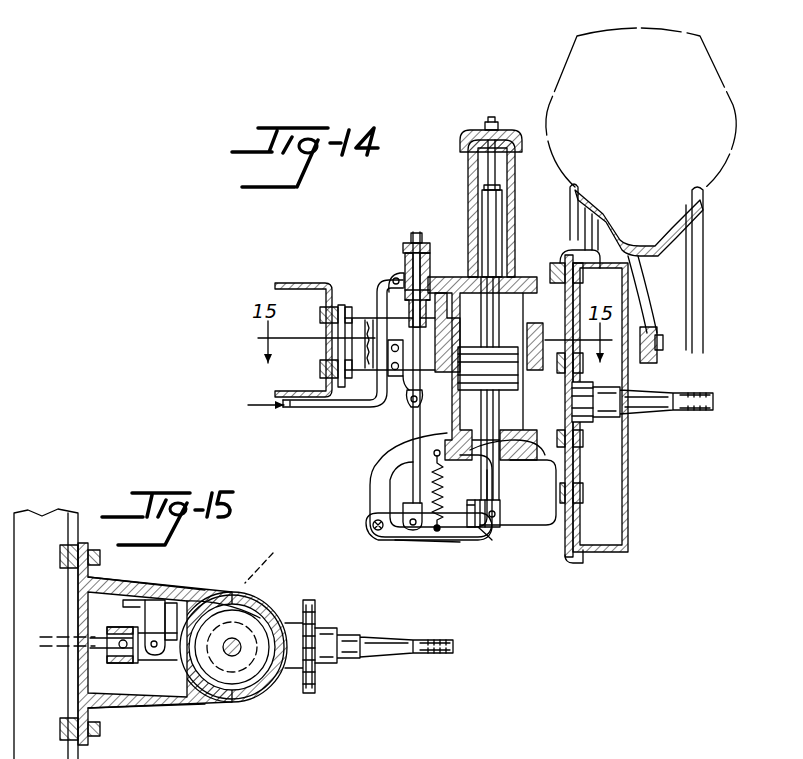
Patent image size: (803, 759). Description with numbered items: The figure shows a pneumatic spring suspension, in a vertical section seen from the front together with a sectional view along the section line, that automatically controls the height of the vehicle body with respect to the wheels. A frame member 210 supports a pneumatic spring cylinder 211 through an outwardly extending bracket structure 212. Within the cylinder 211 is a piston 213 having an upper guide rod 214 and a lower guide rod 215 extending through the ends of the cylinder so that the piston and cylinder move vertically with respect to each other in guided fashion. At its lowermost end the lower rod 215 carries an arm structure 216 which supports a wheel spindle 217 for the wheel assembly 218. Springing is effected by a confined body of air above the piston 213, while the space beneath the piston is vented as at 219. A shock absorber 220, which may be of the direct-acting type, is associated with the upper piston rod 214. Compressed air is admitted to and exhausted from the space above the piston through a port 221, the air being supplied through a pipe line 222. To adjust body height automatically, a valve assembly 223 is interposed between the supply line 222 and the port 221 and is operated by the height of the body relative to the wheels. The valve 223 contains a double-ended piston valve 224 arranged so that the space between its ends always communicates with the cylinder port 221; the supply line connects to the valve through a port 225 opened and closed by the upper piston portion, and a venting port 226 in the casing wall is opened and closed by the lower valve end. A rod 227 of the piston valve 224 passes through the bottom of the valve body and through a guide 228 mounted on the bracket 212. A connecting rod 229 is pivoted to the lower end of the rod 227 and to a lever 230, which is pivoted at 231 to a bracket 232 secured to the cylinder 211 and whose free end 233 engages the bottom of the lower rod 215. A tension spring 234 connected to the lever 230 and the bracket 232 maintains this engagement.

In FIG. 14, the frame member 210 is at (282, 275).
In FIG. 15, the frame member 210 is at (46, 522).
In FIG. 14, the pneumatic spring cylinder 211 is at (433, 428).
In FIG. 15, the pneumatic spring cylinder 211 is at (188, 707).
In FIG. 14, the bracket structure 212 is at (352, 349).
In FIG. 15, the bracket structure 212 is at (172, 710).
In FIG. 14, the piston 213 is at (488, 388).
In FIG. 15, the piston 213 is at (267, 627).
In FIG. 14, the upper guide rod 214 is at (493, 293).
In FIG. 15, the upper guide rod 214 is at (234, 657).
In FIG. 14, the lower guide rod 215 is at (492, 497).
In FIG. 14, the arm structure 216 is at (540, 523).
In FIG. 15, the arm structure 216 is at (281, 562).
In FIG. 14, the wheel spindle 217 is at (652, 413).
In FIG. 15, the wheel spindle 217 is at (385, 660).
In FIG. 14, the wheel assembly 218 is at (706, 283).
In FIG. 14, the vent 219 is at (557, 465).
In FIG. 14, the shock absorber 220 is at (470, 172).
In FIG. 14, the port 221 is at (453, 277).
In FIG. 14, the pipe line 222 is at (330, 407).
In FIG. 15, the pipe line 222 is at (102, 652).
In FIG. 14, the valve assembly 223 is at (403, 243).
In FIG. 14, the double-ended piston valve 224 is at (404, 260).
In FIG. 14, the port 225 is at (388, 267).
In FIG. 14, the venting port 226 is at (407, 302).
In FIG. 14, the rod 227 is at (425, 367).
In FIG. 15, the rod 227 is at (182, 597).
In FIG. 14, the guide 228 is at (405, 388).
In FIG. 15, the guide 228 is at (152, 607).
In FIG. 14, the connecting rod 229 is at (412, 462).
In FIG. 14, the lever 230 is at (440, 527).
In FIG. 14, the pivot 231 is at (370, 537).
In FIG. 14, the bracket 232 is at (380, 493).
In FIG. 14, the free end 233 is at (493, 530).
In FIG. 14, the tension spring 234 is at (448, 540).